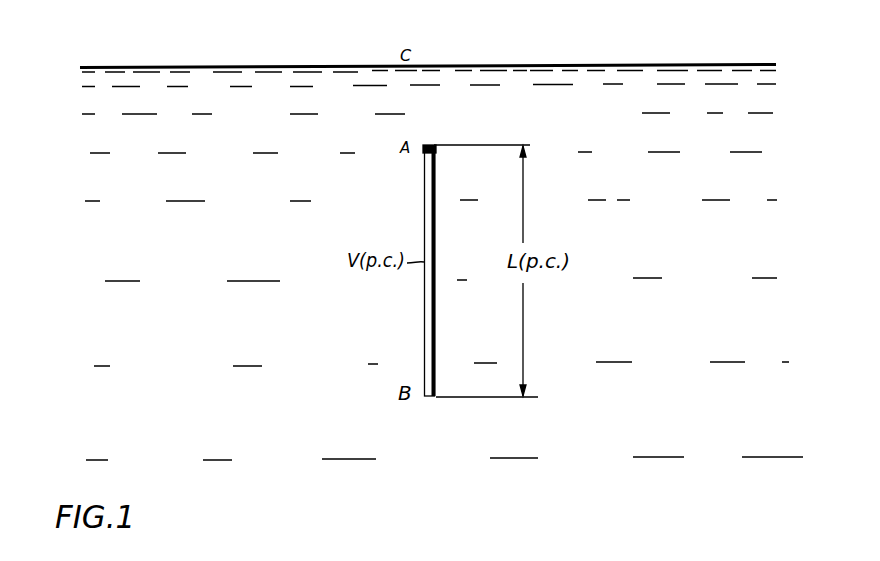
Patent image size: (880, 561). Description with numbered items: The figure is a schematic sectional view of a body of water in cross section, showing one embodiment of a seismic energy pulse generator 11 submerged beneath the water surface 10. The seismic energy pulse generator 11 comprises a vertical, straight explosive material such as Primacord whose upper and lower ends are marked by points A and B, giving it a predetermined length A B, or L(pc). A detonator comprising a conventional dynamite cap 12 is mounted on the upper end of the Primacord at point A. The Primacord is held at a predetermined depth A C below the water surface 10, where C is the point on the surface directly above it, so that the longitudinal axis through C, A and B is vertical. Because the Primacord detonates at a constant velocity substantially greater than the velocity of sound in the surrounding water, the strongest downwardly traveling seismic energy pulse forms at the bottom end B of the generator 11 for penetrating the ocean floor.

The water surface 10 is at (370, 65).
The seismic energy pulse generator 11 is at (424, 194).
The dynamite cap 12 is at (429, 144).